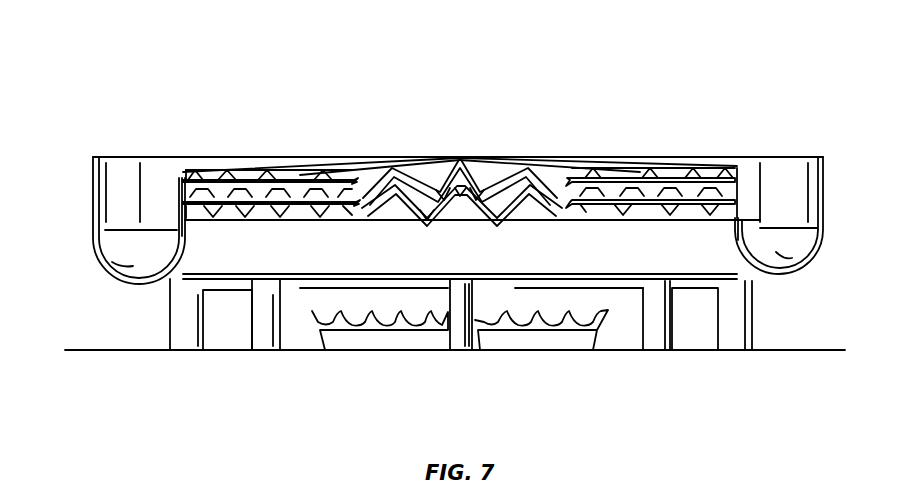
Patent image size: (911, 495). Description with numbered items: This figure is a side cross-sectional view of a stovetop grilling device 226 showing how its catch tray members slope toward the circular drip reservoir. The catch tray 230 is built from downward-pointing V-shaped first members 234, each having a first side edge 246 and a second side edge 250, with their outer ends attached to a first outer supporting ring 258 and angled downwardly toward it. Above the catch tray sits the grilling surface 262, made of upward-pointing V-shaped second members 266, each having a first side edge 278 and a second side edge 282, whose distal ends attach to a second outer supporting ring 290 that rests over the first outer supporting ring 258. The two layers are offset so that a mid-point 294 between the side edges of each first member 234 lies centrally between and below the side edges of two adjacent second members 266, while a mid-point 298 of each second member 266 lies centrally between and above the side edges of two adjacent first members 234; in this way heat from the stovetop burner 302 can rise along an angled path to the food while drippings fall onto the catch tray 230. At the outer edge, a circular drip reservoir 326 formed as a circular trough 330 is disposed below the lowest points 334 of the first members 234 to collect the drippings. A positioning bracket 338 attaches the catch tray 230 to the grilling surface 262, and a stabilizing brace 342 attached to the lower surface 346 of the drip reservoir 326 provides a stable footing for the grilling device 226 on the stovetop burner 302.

The stovetop grilling device 226 is at (768, 125).
The catch tray 230 is at (665, 218).
The first members 234 is at (613, 216).
The first side edge 246 is at (380, 196).
The second side edge 250 is at (459, 198).
The first outer supporting ring 258 is at (277, 205).
The grilling surface 262 is at (683, 166).
The second members 266 is at (633, 164).
The first side edge 278 is at (458, 160).
The second side edge 282 is at (480, 175).
The second outer supporting ring 290 is at (243, 188).
The mid-point 294 is at (425, 216).
The mid-point 298 is at (527, 160).
The stovetop burner 302 is at (598, 352).
The circular drip reservoir 326 is at (818, 181).
The circular trough 330 is at (113, 238).
The lowest points 334 is at (735, 218).
The positioning bracket 338 is at (178, 208).
The stabilizing brace 342 is at (187, 281).
The lower surface 346 is at (140, 281).